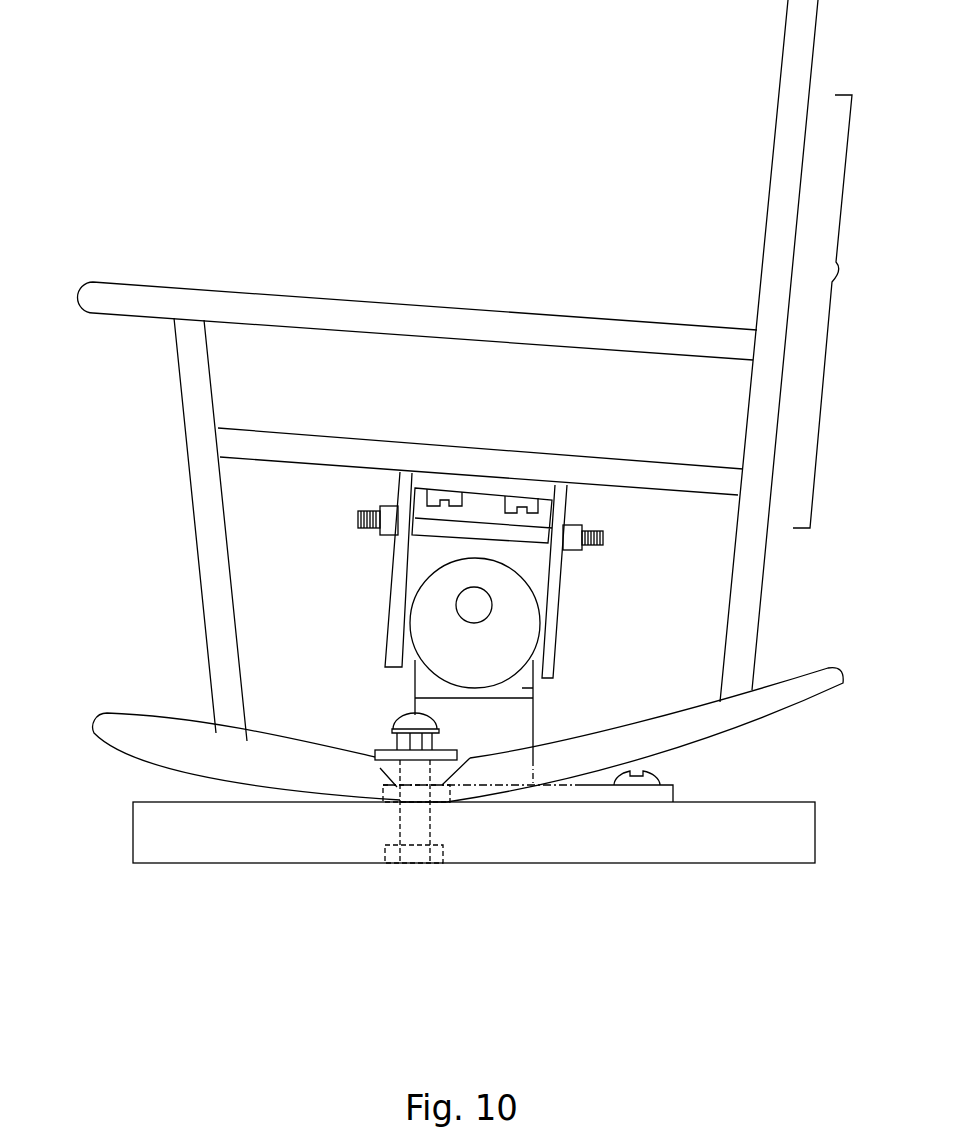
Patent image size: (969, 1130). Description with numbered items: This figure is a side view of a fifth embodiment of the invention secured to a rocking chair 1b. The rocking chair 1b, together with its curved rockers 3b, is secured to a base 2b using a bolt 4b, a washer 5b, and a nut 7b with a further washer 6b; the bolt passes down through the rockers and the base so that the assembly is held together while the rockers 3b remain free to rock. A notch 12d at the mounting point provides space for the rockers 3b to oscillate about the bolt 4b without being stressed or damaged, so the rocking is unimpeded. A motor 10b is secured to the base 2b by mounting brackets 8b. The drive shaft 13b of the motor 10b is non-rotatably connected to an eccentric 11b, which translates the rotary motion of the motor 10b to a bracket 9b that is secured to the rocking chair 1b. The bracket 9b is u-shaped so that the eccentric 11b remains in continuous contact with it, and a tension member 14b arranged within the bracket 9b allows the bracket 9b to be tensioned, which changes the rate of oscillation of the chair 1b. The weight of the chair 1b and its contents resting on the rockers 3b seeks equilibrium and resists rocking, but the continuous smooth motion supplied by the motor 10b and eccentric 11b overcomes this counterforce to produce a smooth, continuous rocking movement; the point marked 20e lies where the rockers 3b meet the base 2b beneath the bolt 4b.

The rocking chair 1b is at (840, 270).
The base 2b is at (600, 838).
The rockers 3b is at (132, 732).
The bolt 4b is at (418, 864).
The washer 5b is at (438, 803).
The washer 6b is at (447, 743).
The nut 7b is at (407, 713).
The mounting brackets 8b is at (583, 795).
The bracket 9b is at (553, 587).
The motor 10b is at (553, 690).
The eccentric 11b is at (507, 666).
The notch 12d is at (382, 768).
The drive shaft 13b is at (470, 605).
The tension member 14b is at (487, 532).
The contact point 20e is at (413, 803).